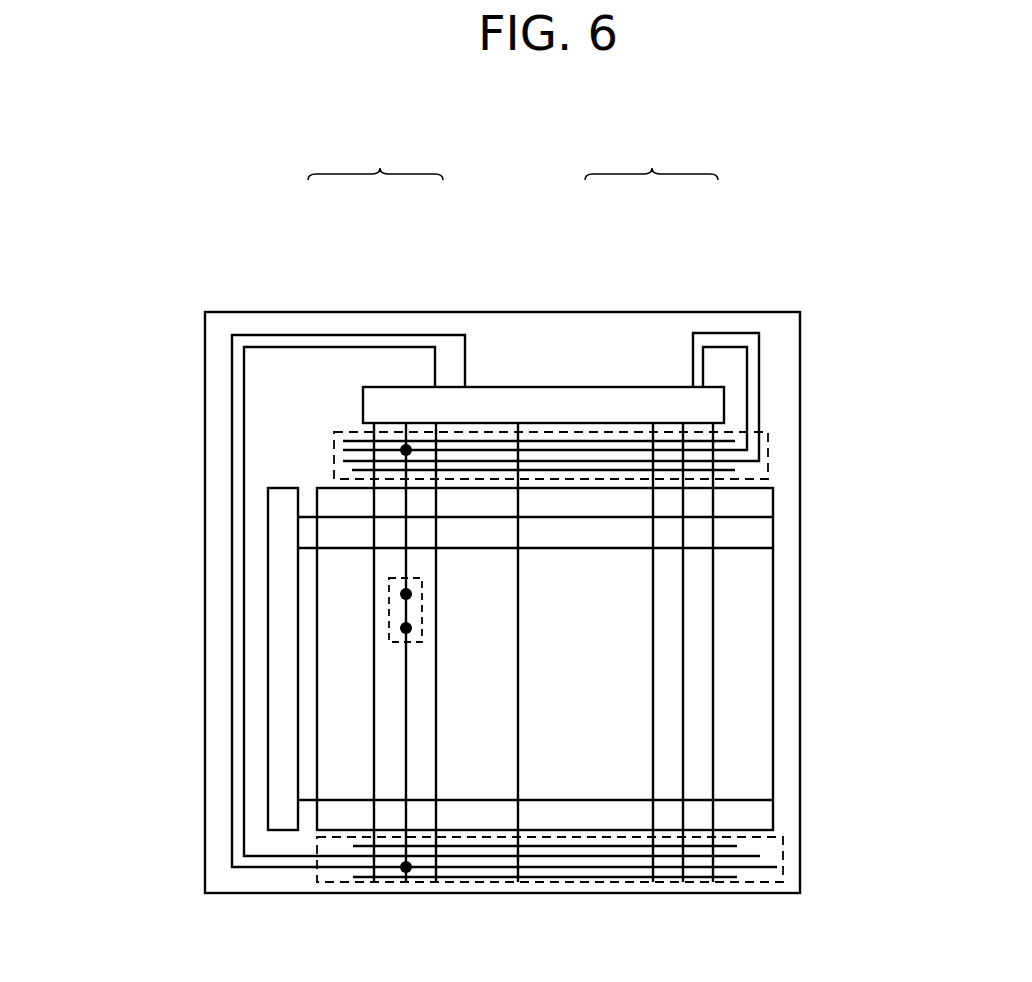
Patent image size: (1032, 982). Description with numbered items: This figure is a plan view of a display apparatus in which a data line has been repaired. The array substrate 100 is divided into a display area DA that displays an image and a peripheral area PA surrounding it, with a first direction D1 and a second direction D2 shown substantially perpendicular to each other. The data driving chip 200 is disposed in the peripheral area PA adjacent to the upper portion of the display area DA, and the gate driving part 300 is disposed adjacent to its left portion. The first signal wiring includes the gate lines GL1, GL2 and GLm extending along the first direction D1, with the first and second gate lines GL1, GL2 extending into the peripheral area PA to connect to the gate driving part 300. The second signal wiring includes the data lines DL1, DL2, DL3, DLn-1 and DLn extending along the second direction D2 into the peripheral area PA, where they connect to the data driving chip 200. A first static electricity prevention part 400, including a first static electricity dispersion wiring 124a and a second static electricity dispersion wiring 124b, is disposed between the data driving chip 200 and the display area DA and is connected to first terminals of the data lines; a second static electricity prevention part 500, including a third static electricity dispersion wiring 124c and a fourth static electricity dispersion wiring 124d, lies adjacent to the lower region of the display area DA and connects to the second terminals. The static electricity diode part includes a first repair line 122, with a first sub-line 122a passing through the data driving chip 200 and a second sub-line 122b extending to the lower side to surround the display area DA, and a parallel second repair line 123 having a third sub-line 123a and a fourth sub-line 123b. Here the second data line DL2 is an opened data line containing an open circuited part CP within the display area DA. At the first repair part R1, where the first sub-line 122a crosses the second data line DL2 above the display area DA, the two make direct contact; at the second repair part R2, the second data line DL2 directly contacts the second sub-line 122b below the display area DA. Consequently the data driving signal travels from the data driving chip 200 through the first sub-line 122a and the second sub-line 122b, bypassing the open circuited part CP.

The array substrate 100 is at (790, 382).
The first repair line 122 is at (651, 160).
The first sub-line 122a is at (710, 347).
The second sub-line 122b is at (458, 333).
The second repair line 123 is at (375, 161).
The third sub-line 123a is at (424, 464).
The fourth sub-line 123b is at (335, 347).
The first static electricity dispersion wiring 124a is at (540, 440).
The second static electricity dispersion wiring 124b is at (606, 468).
The third static electricity dispersion wiring 124c is at (638, 877).
The fourth static electricity dispersion wiring 124d is at (577, 847).
The data driving chip 200 is at (668, 395).
The gate driving part 300 is at (273, 512).
The first static electricity prevention part 400 is at (783, 427).
The second static electricity prevention part 500 is at (793, 820).
The first gate line GL1 is at (765, 517).
The second gate line GL2 is at (765, 548).
The m-th gate line GLm is at (757, 800).
The first data line DL1 is at (374, 642).
The second data line DL2 is at (405, 678).
The third data line DL3 is at (437, 713).
The (n-1)-th data line DLn-1 is at (683, 615).
The n-th data line DLn is at (713, 565).
The open circuited part CP is at (431, 604).
The first repair part R1 is at (388, 445).
The second repair part R2 is at (386, 855).
The peripheral area PA is at (786, 704).
The display area DA is at (750, 748).
The first direction D1 is at (23, 217).
The second direction D2 is at (113, 127).